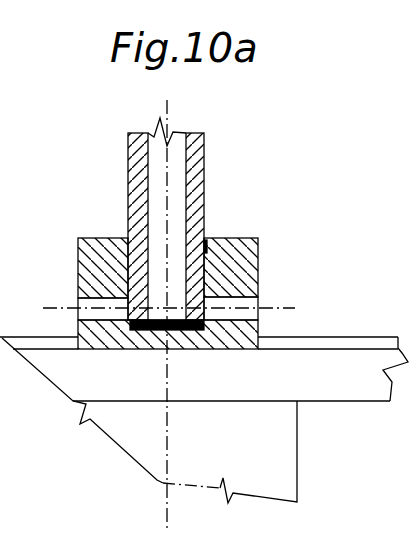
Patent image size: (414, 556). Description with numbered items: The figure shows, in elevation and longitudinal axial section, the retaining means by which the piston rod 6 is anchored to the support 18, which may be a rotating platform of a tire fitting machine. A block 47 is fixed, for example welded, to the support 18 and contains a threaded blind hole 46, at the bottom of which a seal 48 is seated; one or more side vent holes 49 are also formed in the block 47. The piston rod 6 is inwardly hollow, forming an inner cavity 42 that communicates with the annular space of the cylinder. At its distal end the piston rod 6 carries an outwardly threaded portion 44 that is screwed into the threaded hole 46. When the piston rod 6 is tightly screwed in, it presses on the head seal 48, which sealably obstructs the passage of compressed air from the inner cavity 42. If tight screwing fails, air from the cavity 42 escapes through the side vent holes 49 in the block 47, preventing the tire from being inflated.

The piston rod 6 is at (127, 159).
The inner cavity 42 is at (178, 152).
The outwardly threaded portion 44 is at (124, 237).
The threaded blind hole 46 is at (207, 232).
The block 47 is at (260, 252).
The seal 48 is at (153, 333).
The side vent holes 49 is at (80, 306).
The support 18 is at (337, 401).